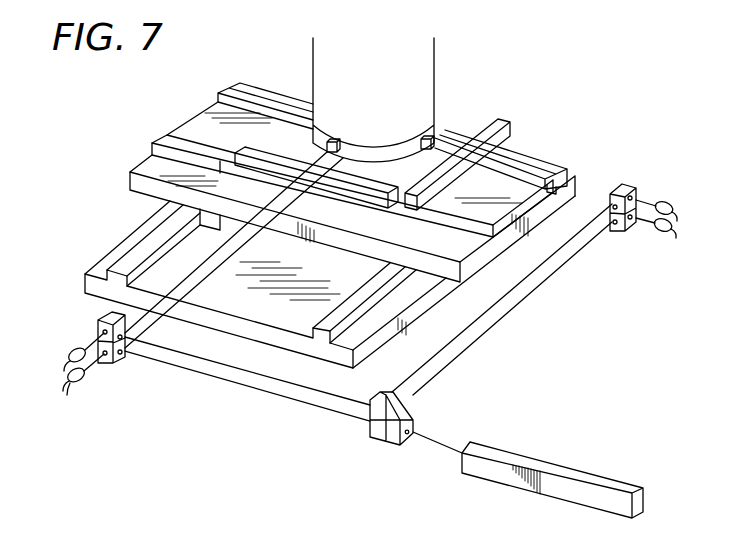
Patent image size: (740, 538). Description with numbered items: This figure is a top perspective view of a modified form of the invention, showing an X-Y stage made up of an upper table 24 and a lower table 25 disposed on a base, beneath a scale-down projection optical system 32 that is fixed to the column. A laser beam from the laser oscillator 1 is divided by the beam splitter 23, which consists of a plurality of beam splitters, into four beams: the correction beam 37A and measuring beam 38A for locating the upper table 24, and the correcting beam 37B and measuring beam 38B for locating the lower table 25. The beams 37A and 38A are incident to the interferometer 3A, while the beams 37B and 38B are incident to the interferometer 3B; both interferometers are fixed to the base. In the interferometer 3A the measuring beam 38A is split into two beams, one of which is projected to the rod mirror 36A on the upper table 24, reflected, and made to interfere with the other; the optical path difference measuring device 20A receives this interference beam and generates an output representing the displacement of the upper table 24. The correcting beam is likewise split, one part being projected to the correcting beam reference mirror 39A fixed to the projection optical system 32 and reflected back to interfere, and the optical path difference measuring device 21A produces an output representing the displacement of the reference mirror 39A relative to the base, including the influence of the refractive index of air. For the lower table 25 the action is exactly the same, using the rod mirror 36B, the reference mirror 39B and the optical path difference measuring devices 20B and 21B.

The laser oscillator 1 is at (577, 472).
The interferometer 3A is at (620, 187).
The interferometer 3B is at (116, 365).
The optical path difference measuring device 20A is at (663, 231).
The optical path difference measuring device 20B is at (79, 386).
The optical path difference measuring device 21A is at (660, 201).
The optical path difference measuring device 21B is at (72, 350).
The beam splitter 23 is at (371, 432).
The upper table 24 is at (467, 125).
The lower table 25 is at (148, 165).
The scale-down projection optical system 32 is at (437, 100).
The rod mirror 36A is at (500, 122).
The rod mirror 36B is at (243, 152).
The correction beam 37A is at (520, 294).
The correcting beam 37B is at (219, 366).
The measuring beam 38A is at (468, 349).
The measuring beam 38B is at (282, 398).
The correcting beam reference mirror 39A is at (426, 140).
The correcting beam reference mirror 39B is at (329, 141).